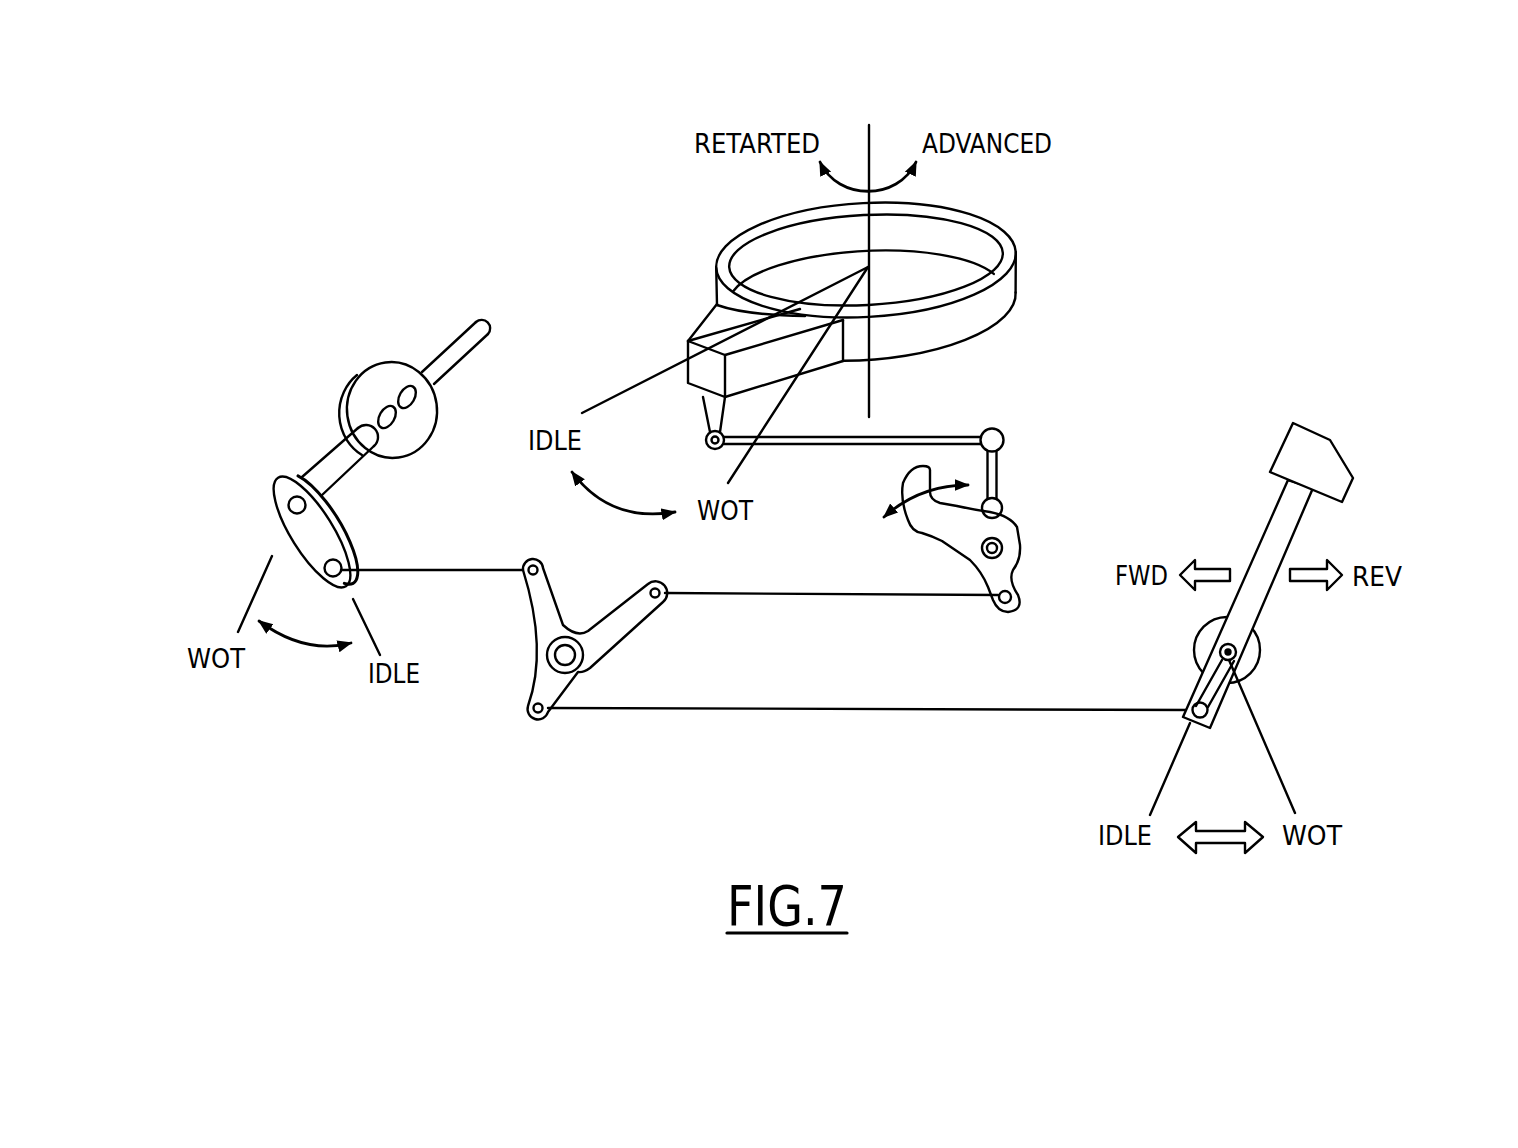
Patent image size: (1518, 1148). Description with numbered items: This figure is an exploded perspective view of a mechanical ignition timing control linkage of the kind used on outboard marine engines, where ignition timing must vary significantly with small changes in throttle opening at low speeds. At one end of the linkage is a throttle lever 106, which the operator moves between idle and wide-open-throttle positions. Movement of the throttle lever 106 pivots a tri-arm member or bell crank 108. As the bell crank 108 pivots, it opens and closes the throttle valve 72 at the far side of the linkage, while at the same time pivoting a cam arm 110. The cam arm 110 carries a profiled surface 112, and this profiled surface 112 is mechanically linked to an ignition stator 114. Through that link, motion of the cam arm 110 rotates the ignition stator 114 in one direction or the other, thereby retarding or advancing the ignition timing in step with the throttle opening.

The throttle valve 72 is at (389, 368).
The throttle lever 106 is at (1333, 534).
The tri-arm member or bell crank 108 is at (612, 661).
The cam arm 110 is at (934, 529).
The profiled surface 112 is at (955, 505).
The ignition stator 114 is at (973, 235).